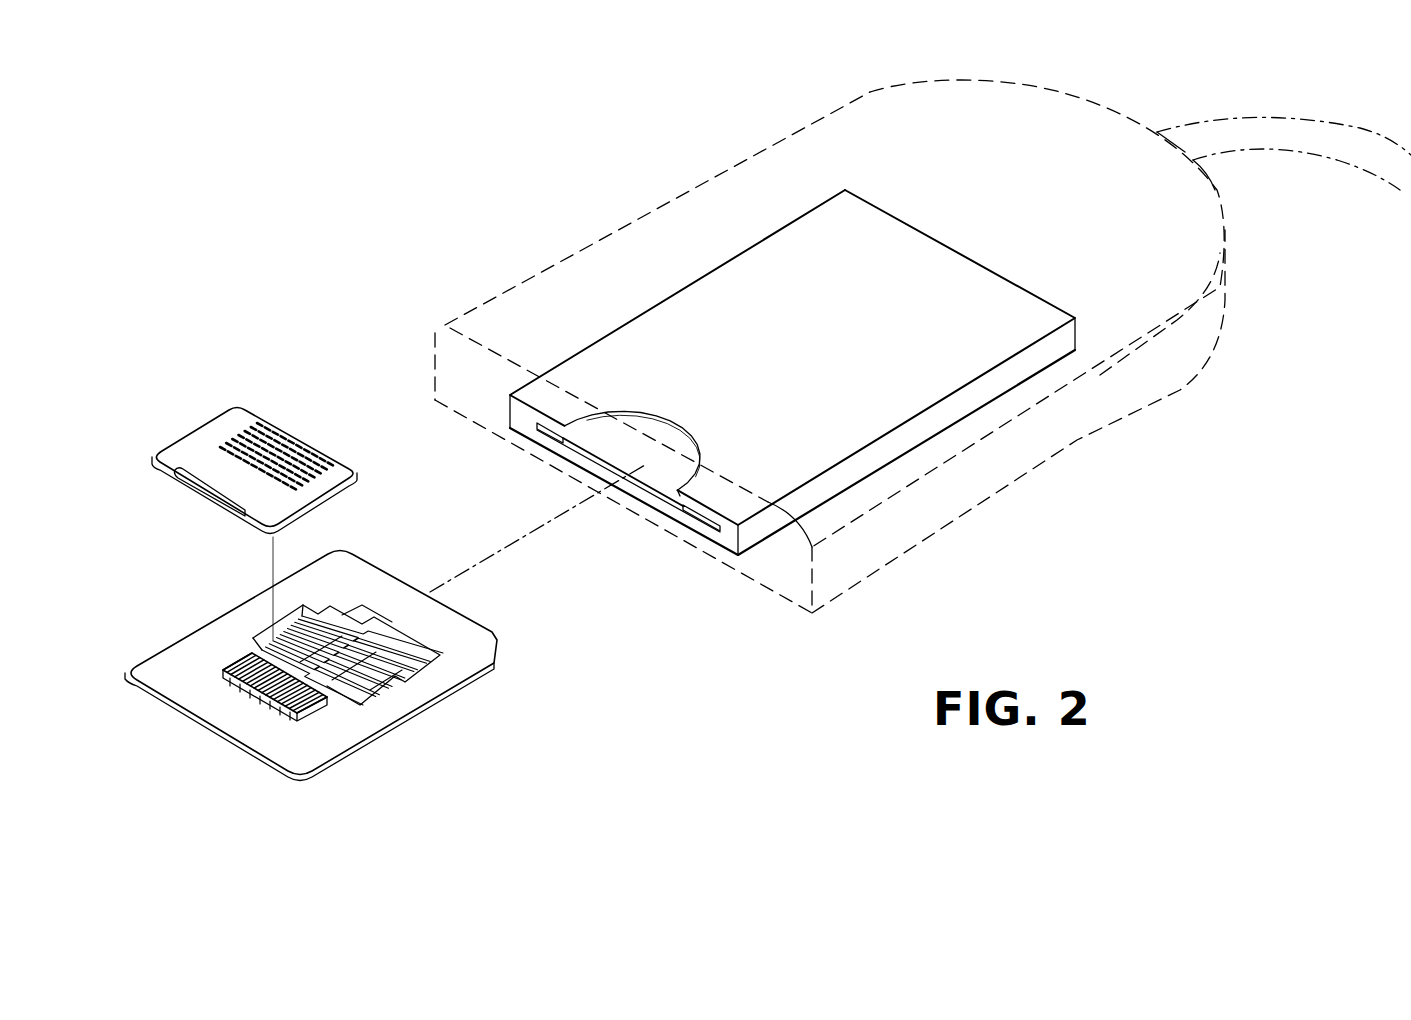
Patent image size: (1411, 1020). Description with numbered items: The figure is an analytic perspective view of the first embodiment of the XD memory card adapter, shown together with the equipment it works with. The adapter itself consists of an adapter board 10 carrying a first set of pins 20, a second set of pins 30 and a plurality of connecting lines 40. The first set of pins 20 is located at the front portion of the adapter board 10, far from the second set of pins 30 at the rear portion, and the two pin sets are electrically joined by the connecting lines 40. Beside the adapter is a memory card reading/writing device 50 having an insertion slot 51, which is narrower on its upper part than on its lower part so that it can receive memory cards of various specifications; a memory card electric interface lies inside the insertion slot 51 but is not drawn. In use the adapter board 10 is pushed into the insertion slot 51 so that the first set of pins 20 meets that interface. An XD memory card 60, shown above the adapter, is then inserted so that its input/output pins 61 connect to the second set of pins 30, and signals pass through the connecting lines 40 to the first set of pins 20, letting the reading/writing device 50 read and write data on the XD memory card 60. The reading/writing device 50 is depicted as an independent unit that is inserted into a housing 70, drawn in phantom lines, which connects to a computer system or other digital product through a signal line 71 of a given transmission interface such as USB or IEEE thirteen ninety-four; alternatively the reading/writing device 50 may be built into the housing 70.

The adapter board 10 is at (165, 608).
The first set of pins 20 is at (352, 602).
The second set of pins 30 is at (253, 690).
The connecting lines 40 is at (372, 695).
The memory card reading/writing device 50 is at (792, 379).
The insertion slot 51 is at (658, 488).
The XD memory card 60 is at (243, 444).
The input/output pins 61 is at (277, 423).
The housing 70 is at (1037, 479).
The signal line 71 is at (1275, 140).